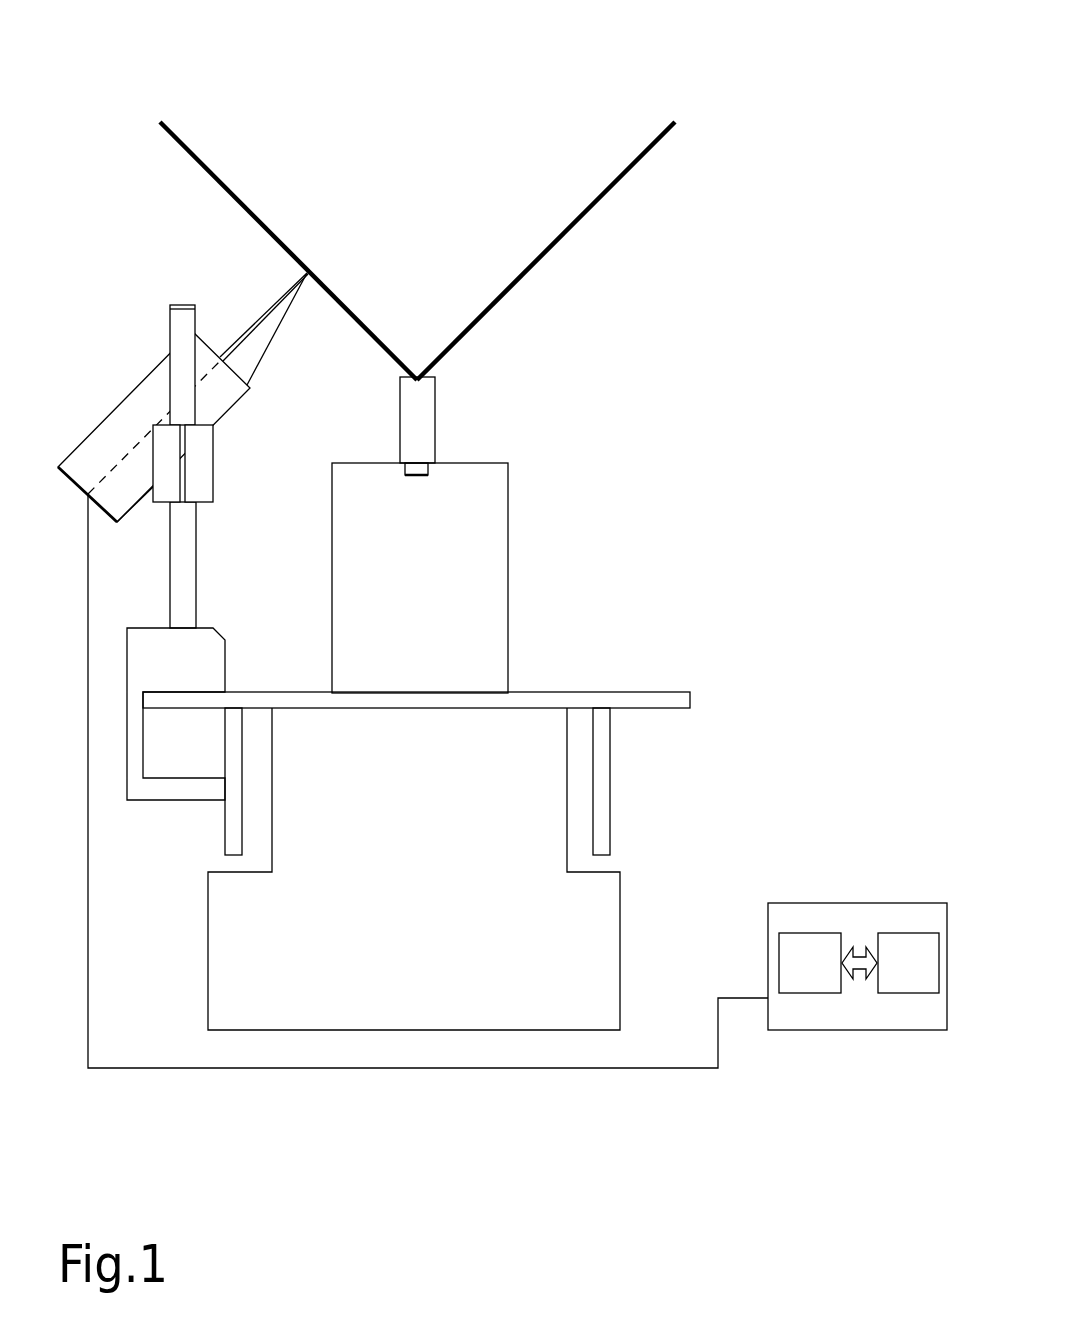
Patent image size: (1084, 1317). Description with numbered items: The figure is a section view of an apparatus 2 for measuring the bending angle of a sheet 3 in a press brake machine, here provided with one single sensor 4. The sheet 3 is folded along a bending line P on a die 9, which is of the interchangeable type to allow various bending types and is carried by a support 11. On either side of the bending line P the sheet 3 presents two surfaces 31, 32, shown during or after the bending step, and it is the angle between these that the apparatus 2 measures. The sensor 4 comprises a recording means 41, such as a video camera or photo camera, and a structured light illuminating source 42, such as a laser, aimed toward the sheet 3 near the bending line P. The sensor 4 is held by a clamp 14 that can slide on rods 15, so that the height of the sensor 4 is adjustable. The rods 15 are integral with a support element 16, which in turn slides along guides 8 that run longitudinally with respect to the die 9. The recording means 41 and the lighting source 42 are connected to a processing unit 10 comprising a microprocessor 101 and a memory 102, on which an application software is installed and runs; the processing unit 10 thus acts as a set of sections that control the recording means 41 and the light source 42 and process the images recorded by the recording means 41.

The apparatus for measuring the bending angle 2 is at (199, 90).
The sheet 3 is at (622, 180).
The first surface of sheet 31 is at (208, 173).
The second surface of sheet 32 is at (585, 218).
The sensor 4 is at (127, 390).
The recording means 41 is at (73, 465).
The structured light illuminating source 42 is at (128, 508).
The rods 15 is at (177, 322).
The clamp 14 is at (205, 468).
The support element 16 is at (207, 648).
The guides 8 is at (233, 742).
The die 9 is at (422, 430).
The bending line P is at (417, 382).
The support 11 is at (480, 597).
The processing unit 10 is at (845, 915).
The microprocessor 101 is at (810, 963).
The memory 102 is at (908, 963).